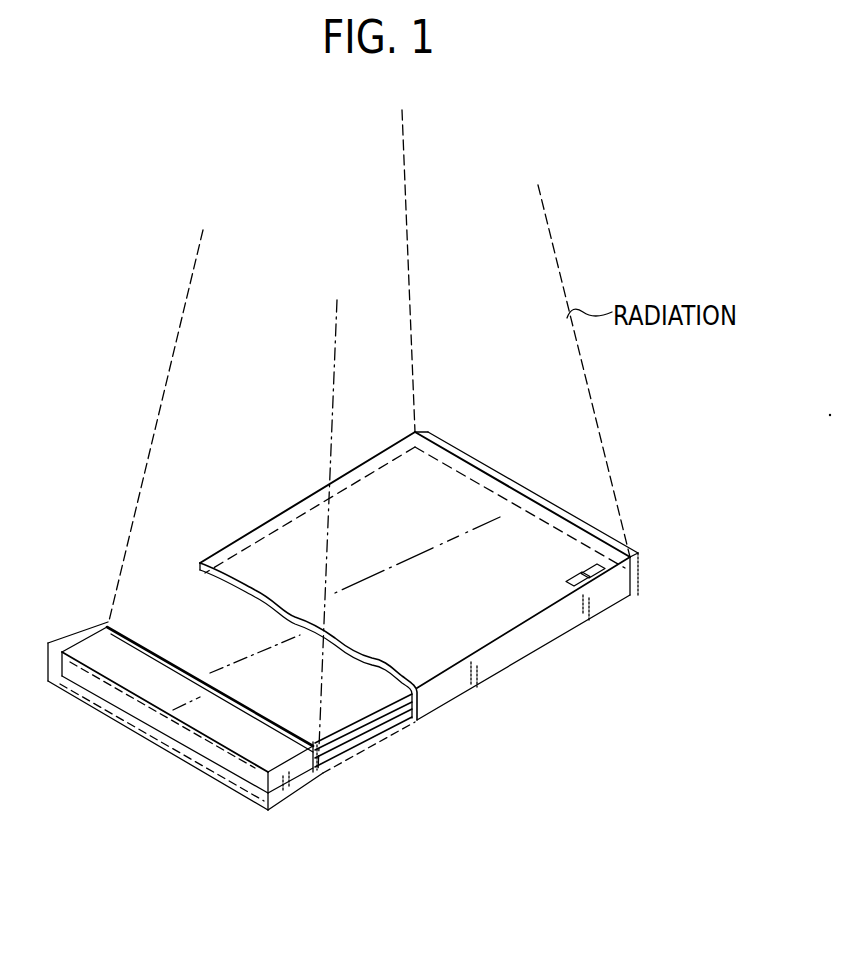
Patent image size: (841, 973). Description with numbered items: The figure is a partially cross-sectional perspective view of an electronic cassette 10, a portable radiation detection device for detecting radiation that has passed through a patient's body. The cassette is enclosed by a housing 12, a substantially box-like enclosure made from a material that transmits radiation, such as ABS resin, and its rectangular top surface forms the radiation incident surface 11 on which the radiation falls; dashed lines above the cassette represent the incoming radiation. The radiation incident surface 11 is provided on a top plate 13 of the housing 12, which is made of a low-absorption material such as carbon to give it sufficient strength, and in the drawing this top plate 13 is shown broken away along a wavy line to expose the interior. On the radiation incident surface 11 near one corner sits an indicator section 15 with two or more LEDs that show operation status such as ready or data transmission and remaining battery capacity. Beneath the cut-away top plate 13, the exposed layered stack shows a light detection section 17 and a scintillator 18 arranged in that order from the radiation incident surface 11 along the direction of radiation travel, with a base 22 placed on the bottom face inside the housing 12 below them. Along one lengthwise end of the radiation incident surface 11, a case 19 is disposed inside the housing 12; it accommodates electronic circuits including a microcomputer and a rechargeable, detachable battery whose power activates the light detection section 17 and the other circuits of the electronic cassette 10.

The electronic cassette 10 is at (560, 497).
The radiation incident surface 11 is at (467, 510).
The housing 12 is at (535, 655).
The top plate 13 is at (250, 583).
The indicator section 15 is at (602, 567).
The light detection section 17 is at (363, 707).
The scintillator 18 is at (358, 733).
The case 19 is at (156, 713).
The base 22 is at (330, 762).